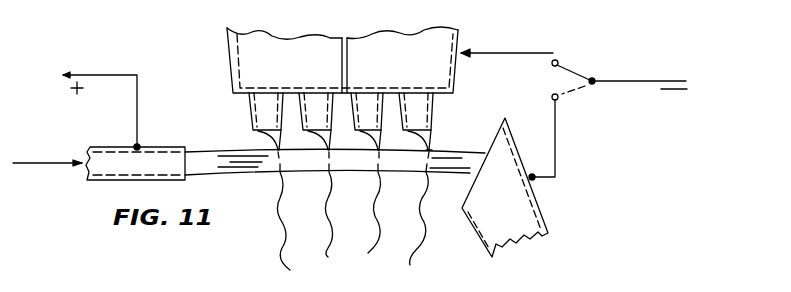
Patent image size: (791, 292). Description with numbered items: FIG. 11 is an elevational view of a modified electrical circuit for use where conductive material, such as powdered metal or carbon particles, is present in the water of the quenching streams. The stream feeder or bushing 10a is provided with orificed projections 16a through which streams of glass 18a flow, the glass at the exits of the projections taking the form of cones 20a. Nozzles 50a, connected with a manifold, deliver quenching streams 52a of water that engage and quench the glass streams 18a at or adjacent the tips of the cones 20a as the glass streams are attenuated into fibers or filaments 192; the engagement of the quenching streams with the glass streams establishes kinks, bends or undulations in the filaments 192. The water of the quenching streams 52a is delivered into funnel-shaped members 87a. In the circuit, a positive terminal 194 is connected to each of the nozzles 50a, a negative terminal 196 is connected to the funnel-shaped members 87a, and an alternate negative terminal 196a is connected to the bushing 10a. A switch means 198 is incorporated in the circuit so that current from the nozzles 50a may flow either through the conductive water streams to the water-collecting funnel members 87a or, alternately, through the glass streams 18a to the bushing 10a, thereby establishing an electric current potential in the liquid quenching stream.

The stream feeder or bushing 10a is at (230, 53).
The orificed projections 16a is at (250, 107).
The cones 20a is at (270, 137).
The streams of glass 18a is at (431, 150).
The quenching streams 52a is at (200, 151).
The nozzles 50a is at (110, 181).
The positive terminal 194 is at (136, 145).
The fibers or filaments 192 is at (366, 237).
The alternate negative terminal 196a is at (464, 50).
The switch means 198 is at (568, 68).
The negative terminal 196 is at (536, 178).
The funnel-shaped members 87a is at (542, 217).